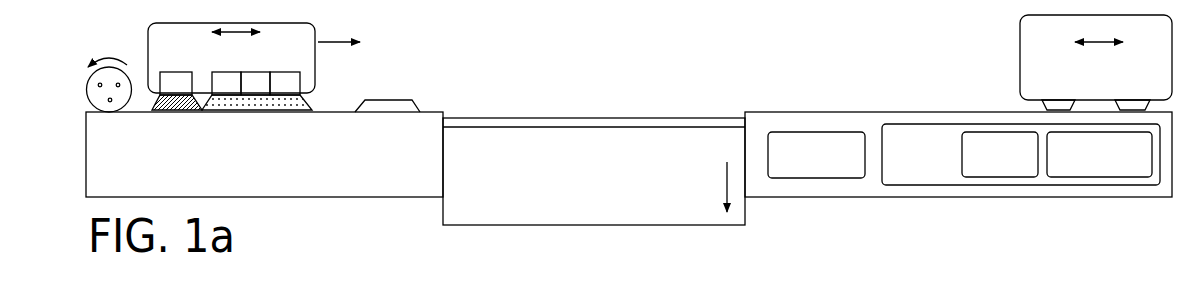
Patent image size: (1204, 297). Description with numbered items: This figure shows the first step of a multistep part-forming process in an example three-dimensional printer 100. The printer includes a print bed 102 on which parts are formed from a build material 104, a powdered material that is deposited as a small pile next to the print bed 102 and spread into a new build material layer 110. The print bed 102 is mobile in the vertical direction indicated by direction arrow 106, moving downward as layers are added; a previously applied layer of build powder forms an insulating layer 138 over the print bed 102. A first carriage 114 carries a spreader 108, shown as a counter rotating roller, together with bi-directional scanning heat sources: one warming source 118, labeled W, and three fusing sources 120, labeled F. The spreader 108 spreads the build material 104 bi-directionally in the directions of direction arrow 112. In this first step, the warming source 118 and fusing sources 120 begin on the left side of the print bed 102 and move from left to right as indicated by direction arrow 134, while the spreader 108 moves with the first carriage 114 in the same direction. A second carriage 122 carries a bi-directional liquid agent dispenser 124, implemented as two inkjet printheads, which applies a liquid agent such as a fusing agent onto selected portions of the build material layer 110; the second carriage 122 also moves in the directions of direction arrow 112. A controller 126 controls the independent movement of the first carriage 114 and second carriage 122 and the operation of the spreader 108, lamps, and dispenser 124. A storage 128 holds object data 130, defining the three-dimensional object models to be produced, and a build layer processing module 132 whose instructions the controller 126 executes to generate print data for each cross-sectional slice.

The 3D printer 100 is at (88, 18).
The print bed 102 is at (443, 212).
The build material 104 is at (413, 102).
The direction arrow 106 is at (726, 182).
The spreader 108 is at (86, 96).
The build material layer 110 is at (590, 128).
The direction arrow 112 is at (244, 29).
The first carriage 114 is at (317, 88).
The warming source 118 is at (172, 72).
The fusing source 120 is at (248, 72).
The second carriage 122 is at (1020, 50).
The liquid agent dispenser 124 is at (1128, 100).
The controller 126 is at (816, 155).
The storage 128 is at (1021, 154).
The object data 130 is at (1000, 154).
The build layer processing module 132 is at (1099, 154).
The direction arrow 134 is at (327, 42).
The insulating layer 138 is at (513, 127).